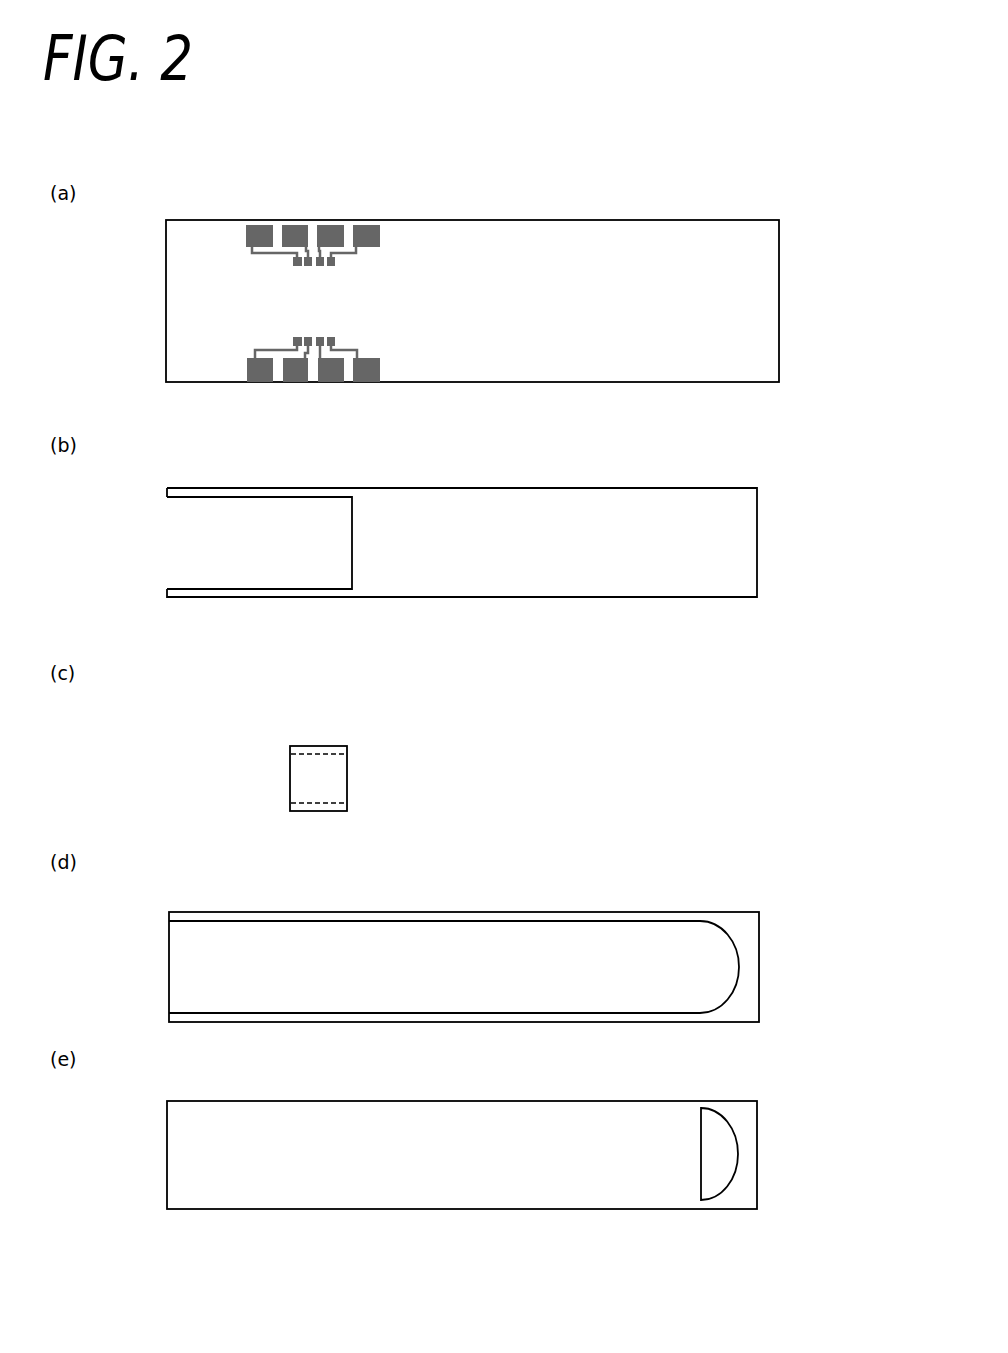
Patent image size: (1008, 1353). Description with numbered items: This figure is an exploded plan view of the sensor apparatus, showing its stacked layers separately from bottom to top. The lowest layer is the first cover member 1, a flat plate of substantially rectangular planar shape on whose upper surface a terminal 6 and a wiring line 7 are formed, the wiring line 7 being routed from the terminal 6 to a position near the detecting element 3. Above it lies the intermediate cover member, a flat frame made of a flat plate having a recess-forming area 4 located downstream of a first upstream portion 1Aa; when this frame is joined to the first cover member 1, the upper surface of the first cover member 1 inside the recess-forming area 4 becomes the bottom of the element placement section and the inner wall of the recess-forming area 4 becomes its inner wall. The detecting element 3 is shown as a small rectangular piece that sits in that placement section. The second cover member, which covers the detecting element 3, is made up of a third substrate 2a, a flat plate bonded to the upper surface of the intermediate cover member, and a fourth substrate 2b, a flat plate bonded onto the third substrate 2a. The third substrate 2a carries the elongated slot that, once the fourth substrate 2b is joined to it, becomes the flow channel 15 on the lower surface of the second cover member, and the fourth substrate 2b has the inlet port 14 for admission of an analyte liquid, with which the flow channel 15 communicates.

The first cover member 1 is at (756, 264).
The terminal 6 is at (363, 233).
The wiring line 7 is at (260, 253).
The first upstream portion 1Aa is at (716, 530).
The recess-forming area 4 is at (252, 541).
The detecting element 3 is at (332, 763).
The third substrate 2a is at (747, 955).
The flow channel 15 is at (561, 957).
The fourth substrate 2b is at (748, 1168).
The inlet port 14 is at (715, 1165).